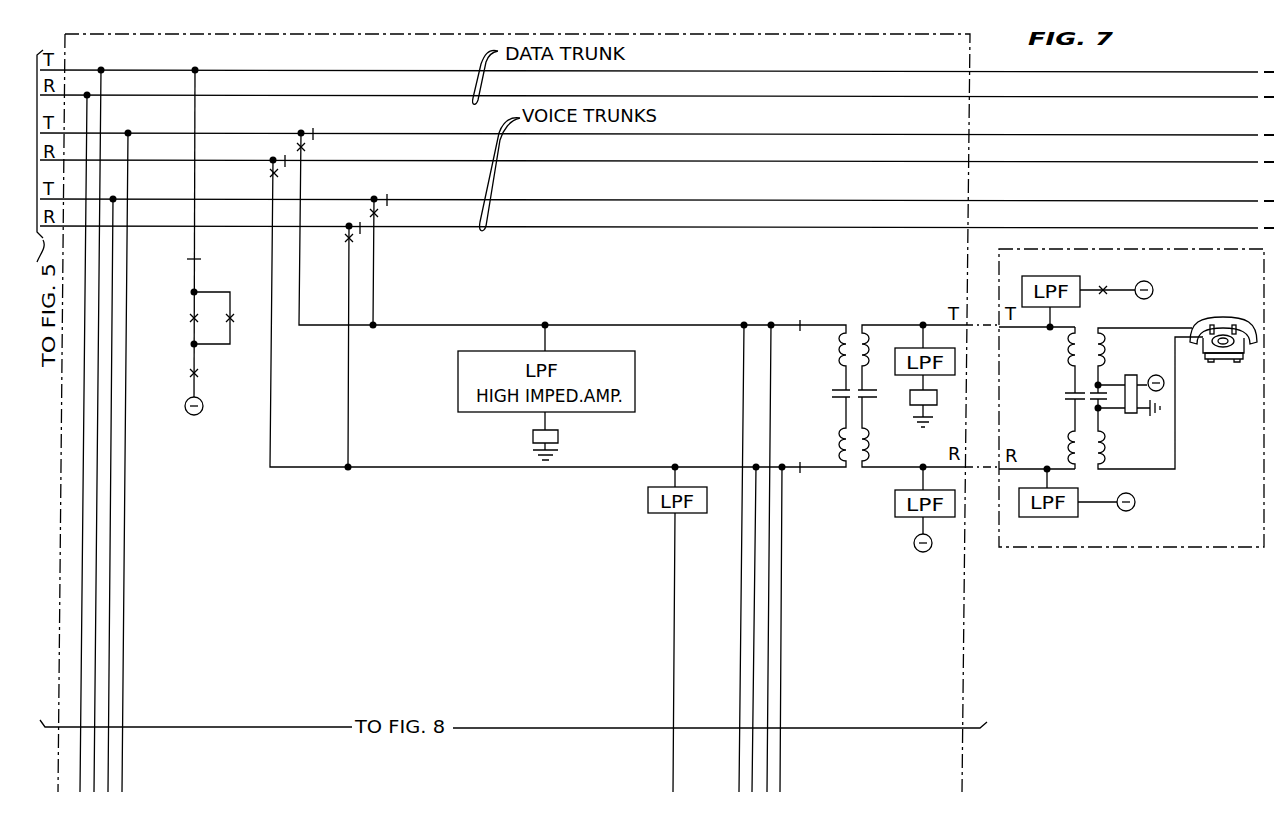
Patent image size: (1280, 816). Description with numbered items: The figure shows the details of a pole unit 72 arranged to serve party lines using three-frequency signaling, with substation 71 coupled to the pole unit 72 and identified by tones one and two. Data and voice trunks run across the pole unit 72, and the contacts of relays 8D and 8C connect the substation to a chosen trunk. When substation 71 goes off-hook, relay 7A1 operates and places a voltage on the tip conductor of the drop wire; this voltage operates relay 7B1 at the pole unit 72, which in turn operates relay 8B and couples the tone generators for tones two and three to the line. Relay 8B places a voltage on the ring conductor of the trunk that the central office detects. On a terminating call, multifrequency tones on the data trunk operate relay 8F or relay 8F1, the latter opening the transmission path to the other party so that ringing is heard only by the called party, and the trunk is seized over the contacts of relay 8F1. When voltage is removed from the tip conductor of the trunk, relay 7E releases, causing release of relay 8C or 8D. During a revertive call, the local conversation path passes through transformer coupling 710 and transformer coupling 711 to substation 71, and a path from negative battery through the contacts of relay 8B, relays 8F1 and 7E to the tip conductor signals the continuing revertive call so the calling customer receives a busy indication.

The relay 8D is at (277, 155).
The relay 8C is at (353, 222).
The relay 7E is at (585, 437).
The relay 8F is at (488, 381).
The relay 8F1 is at (244, 318).
The relay 8B is at (205, 389).
The transformer coupling 710 is at (828, 382).
The relay 7B1 is at (910, 395).
The relay 7A1 is at (1127, 338).
The transformer coupling 711 is at (1062, 380).
The substation 71 is at (1223, 327).
The pole unit 72 is at (966, 574).